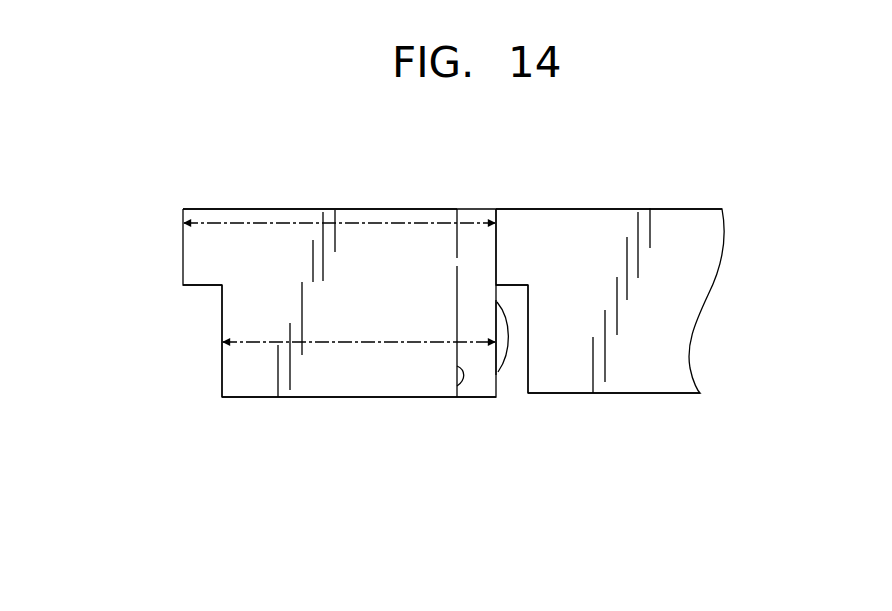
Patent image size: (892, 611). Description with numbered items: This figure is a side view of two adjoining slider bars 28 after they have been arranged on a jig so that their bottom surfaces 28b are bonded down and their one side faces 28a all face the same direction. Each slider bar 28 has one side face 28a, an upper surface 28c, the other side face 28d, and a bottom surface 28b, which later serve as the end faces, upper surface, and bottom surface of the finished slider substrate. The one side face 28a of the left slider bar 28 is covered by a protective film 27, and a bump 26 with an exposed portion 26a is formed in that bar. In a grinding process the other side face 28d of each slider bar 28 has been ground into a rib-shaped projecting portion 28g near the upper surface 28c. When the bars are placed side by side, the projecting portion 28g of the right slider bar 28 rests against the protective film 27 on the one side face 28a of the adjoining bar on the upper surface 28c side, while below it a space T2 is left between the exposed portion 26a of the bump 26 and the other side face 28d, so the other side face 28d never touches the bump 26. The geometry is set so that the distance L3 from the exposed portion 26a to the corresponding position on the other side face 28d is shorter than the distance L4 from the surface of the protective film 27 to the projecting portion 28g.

The slider bar 28 is at (207, 197).
The protective film 27 is at (468, 208).
The upper surface 28c is at (296, 208).
The projecting portion 28g is at (183, 277).
The other side face 28d is at (221, 375).
The bottom surface 28b is at (299, 397).
The one side face 28a is at (458, 385).
The bump 26 is at (494, 348).
The exposed portion 26a is at (510, 368).
The space T2 is at (513, 370).
The distance L4 is at (247, 225).
The distance L3 is at (271, 340).